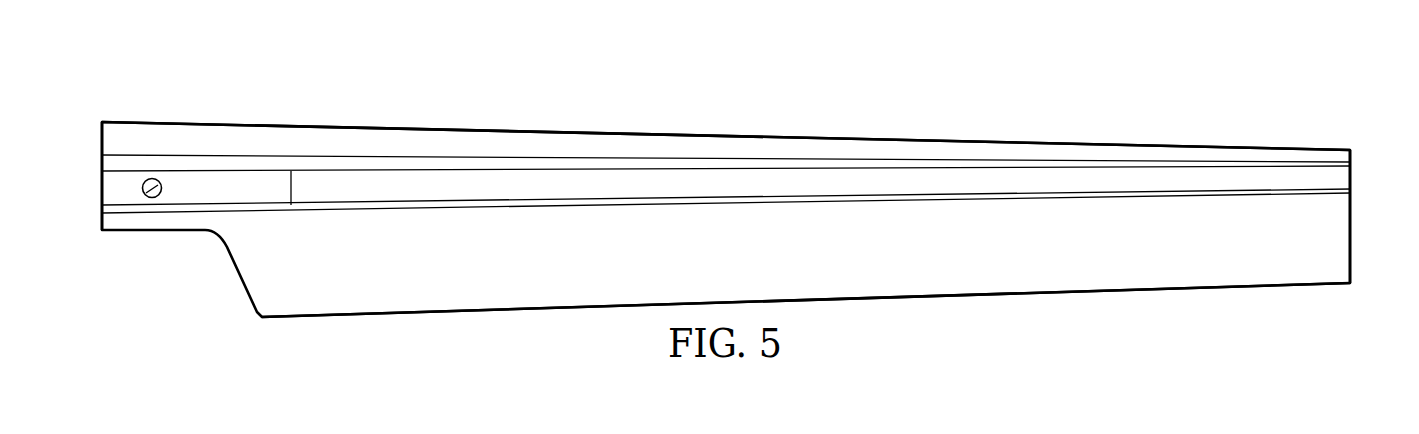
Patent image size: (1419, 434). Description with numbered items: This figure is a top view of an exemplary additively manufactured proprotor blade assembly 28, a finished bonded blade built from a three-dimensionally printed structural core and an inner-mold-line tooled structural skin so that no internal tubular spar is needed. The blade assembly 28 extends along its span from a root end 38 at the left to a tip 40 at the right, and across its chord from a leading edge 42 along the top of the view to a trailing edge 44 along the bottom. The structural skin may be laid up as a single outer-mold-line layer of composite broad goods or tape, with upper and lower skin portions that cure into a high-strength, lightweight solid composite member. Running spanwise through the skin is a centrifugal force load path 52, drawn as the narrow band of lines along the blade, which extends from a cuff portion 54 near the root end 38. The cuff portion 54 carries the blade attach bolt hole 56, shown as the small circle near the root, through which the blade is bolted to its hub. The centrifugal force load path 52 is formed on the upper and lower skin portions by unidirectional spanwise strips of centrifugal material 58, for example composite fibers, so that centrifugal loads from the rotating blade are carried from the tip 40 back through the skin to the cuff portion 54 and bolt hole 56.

The proprotor blade assembly 28 is at (359, 63).
The root end 38 is at (102, 165).
The tip 40 is at (1352, 215).
The leading edge 42 is at (1040, 143).
The trailing edge 44 is at (1120, 291).
The centrifugal force load path 52 is at (572, 189).
The cuff portion 54 is at (122, 141).
The blade attach bolt hole 56 is at (153, 198).
The unidirectional spanwise strips of centrifugal material 58 is at (726, 201).